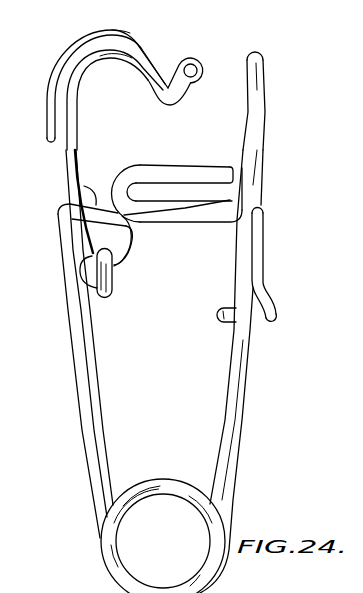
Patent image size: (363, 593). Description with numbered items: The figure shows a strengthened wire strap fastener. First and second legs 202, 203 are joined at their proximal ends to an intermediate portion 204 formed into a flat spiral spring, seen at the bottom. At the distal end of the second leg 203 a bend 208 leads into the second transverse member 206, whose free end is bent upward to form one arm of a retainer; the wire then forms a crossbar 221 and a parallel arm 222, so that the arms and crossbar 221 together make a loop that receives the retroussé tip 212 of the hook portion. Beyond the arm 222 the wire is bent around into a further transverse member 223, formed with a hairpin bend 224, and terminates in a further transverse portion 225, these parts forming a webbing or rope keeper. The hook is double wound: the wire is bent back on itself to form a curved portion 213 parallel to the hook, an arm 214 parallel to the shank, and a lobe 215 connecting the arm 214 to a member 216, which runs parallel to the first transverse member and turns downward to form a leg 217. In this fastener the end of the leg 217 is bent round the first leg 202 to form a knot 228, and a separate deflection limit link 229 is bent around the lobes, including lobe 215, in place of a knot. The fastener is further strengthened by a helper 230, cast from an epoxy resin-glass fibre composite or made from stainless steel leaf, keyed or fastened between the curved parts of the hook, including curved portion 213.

The first leg 202 is at (228, 428).
The second leg 203 is at (83, 395).
The intermediate portion 204 is at (208, 505).
The second transverse member 206 is at (93, 193).
The bend 208 is at (58, 223).
The retroussé tip 212 is at (173, 97).
The curved portion 213 is at (116, 52).
The arm 214 is at (60, 88).
The lobe 215 is at (121, 273).
The member 216 is at (167, 229).
The leg 217 is at (254, 266).
The crossbar 221 is at (258, 62).
The arm 222 is at (259, 113).
The further transverse member 223 is at (155, 212).
The hairpin bend 224 is at (117, 178).
The further transverse portion 225 is at (215, 173).
The knot 228 is at (268, 324).
The deflection limit link 229 is at (118, 268).
The helper 230 is at (129, 31).